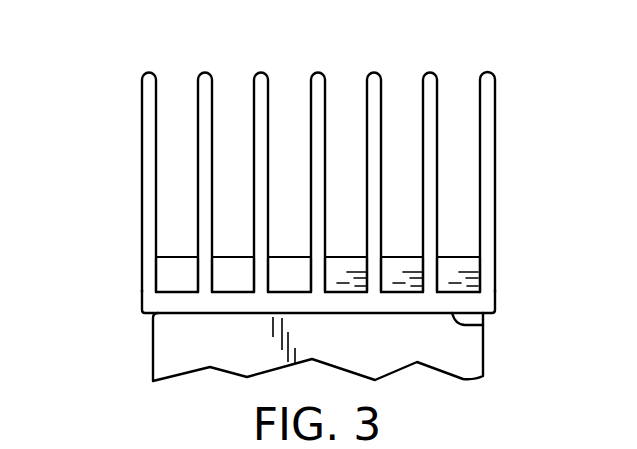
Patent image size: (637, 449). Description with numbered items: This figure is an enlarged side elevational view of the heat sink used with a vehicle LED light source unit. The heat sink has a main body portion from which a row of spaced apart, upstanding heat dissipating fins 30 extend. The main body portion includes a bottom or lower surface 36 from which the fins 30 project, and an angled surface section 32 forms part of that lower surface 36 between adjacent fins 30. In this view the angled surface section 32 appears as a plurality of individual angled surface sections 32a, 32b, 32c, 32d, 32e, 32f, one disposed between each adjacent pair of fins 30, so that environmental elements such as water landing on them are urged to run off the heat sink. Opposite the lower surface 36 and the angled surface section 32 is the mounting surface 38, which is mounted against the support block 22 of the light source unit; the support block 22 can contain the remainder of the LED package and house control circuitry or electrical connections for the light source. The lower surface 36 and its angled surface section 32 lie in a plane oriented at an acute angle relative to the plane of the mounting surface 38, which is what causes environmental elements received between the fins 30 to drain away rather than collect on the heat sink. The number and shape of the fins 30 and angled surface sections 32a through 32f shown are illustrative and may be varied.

The support block 22 is at (468, 353).
The fins 30 is at (485, 82).
The angled surface section 32 is at (458, 256).
The angled surface section 32a is at (167, 275).
The angled surface section 32b is at (230, 268).
The angled surface section 32c is at (290, 282).
The angled surface section 32d is at (350, 267).
The angled surface section 32e is at (398, 267).
The angled surface section 32f is at (463, 273).
The lower surface 36 is at (293, 263).
The mounting surface 38 is at (483, 325).